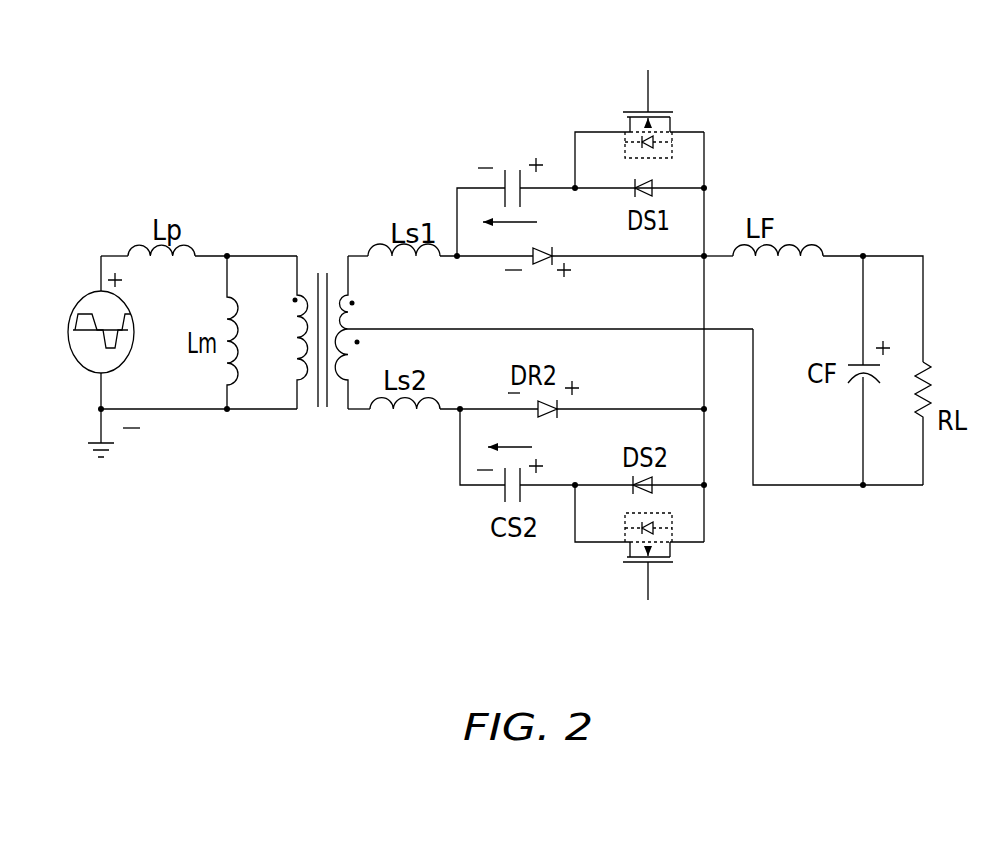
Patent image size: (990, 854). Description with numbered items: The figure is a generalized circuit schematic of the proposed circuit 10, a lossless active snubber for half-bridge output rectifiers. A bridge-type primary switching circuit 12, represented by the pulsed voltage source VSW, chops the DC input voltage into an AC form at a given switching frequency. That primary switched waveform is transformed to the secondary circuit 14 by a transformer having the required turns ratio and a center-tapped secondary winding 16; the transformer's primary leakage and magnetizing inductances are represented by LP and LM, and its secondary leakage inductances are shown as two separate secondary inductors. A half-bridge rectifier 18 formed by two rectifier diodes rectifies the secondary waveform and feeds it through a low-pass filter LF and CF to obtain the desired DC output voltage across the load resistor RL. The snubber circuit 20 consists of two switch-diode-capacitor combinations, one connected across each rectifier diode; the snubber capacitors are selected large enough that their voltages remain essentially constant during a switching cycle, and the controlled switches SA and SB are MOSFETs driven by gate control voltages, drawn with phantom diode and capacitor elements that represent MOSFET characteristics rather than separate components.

The proposed circuit 10 is at (491, 367).
The bridge-type primary switching circuit 12 is at (105, 240).
The secondary circuit 14 is at (448, 187).
The center-tapped secondary winding 16 is at (368, 315).
The half-bridge rectifier 18 is at (575, 288).
The snubber circuit 20 is at (730, 80).